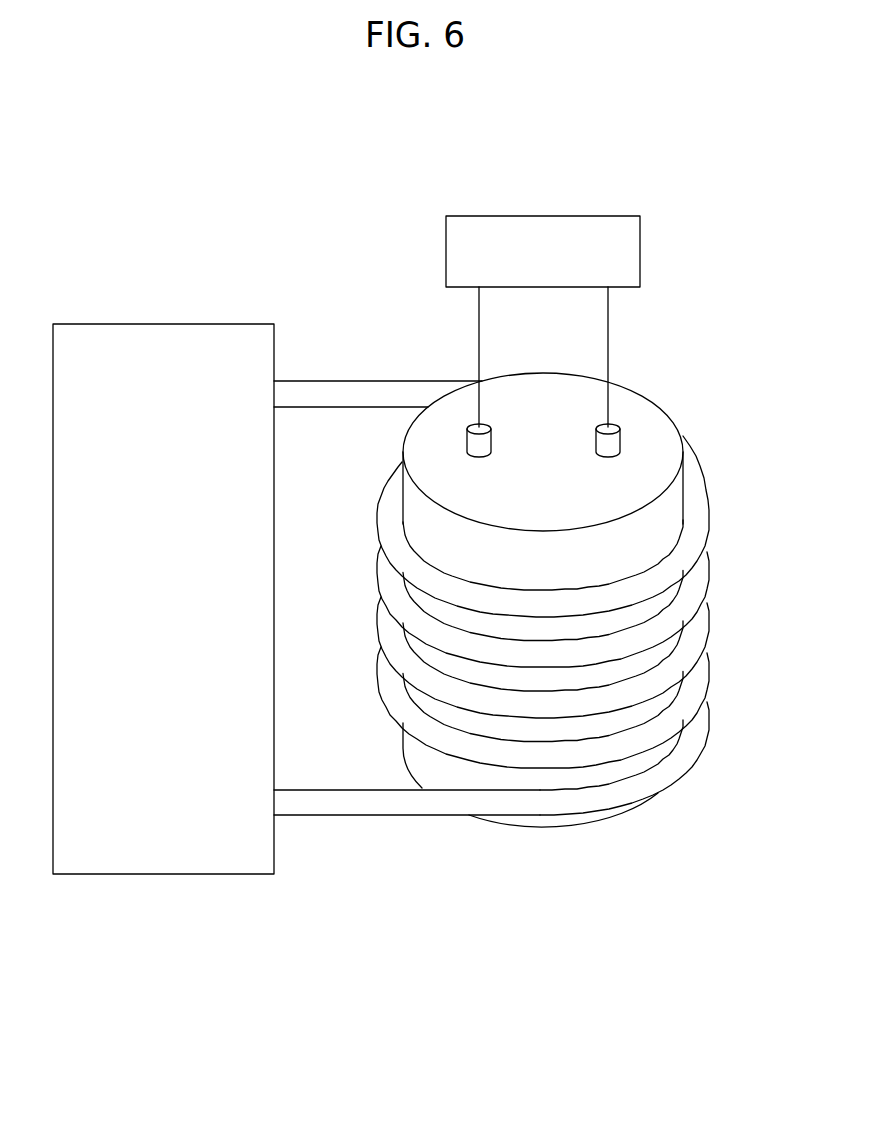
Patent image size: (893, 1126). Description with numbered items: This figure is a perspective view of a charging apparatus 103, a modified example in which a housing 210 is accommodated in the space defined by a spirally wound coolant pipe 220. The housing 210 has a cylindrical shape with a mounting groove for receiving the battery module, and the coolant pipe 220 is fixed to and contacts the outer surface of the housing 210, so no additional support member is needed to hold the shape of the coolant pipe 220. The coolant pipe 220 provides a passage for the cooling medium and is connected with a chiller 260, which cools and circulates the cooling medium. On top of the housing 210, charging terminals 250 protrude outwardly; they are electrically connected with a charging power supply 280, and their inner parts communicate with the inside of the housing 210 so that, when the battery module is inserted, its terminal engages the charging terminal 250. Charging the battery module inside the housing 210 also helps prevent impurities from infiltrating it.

The charging apparatus 103 is at (401, 159).
The housing 210 is at (496, 775).
The coolant pipe 220 is at (709, 555).
The charging terminal 250 is at (610, 448).
The chiller 260 is at (163, 875).
The charging power supply 280 is at (640, 251).